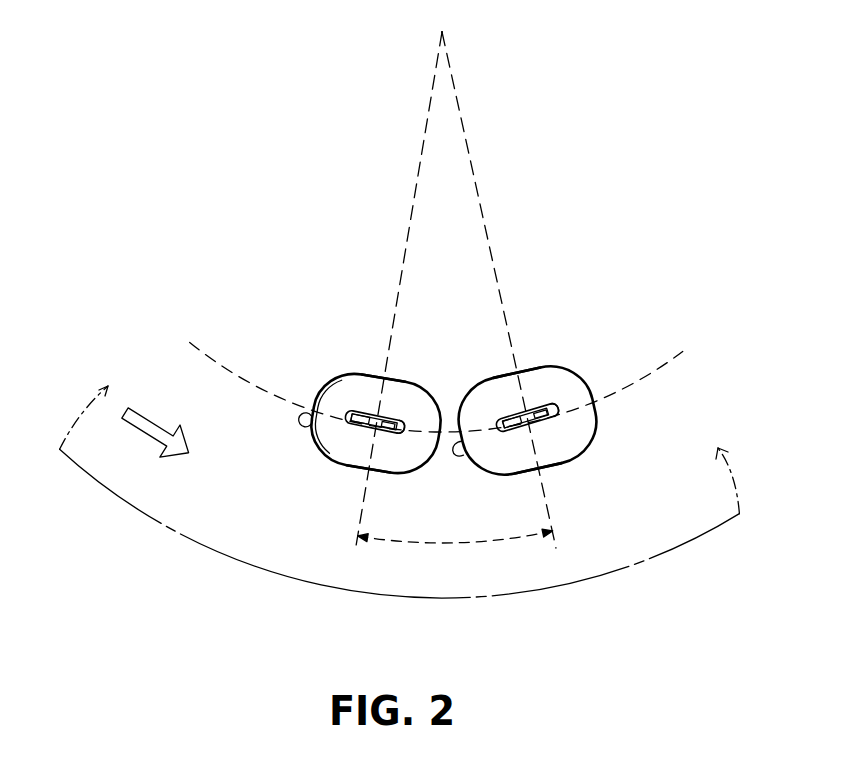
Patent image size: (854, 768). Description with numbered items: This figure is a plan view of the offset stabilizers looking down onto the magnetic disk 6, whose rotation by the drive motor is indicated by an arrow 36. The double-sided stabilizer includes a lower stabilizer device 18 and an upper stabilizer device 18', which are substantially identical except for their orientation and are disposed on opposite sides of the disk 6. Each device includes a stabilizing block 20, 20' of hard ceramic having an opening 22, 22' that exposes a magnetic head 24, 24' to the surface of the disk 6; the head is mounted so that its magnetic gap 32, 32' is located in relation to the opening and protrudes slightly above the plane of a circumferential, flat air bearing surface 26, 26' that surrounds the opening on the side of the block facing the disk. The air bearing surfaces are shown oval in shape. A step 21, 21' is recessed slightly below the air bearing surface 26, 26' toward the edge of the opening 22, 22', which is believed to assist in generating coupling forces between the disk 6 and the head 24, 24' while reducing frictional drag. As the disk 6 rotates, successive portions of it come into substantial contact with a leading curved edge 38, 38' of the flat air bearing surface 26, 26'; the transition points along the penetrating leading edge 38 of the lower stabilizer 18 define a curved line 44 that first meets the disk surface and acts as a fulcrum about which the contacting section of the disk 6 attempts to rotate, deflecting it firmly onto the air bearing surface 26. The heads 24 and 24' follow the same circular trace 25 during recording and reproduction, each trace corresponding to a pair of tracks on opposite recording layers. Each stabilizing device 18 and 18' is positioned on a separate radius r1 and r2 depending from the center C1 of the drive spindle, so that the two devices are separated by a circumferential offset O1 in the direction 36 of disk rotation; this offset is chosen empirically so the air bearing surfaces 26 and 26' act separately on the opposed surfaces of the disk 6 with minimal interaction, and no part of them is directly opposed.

The magnetic disk 6 is at (230, 530).
The lower stabilizer device 18 is at (376, 390).
The upper stabilizer device 18' is at (538, 381).
The stabilizing block 20 is at (379, 489).
The stabilizing block 20' is at (528, 488).
The step 21 is at (330, 388).
The step 21' is at (487, 391).
The opening 22 is at (420, 458).
The opening 22' is at (587, 441).
The magnetic head 24 is at (391, 390).
The magnetic head 24' is at (547, 460).
The circular trace 25 is at (248, 381).
The air bearing surface 26 is at (368, 347).
The air bearing surface 26' is at (526, 345).
The magnetic gap 32 is at (374, 383).
The magnetic gap 32' is at (520, 381).
The arrow 36 is at (138, 417).
The leading curved edge 38 is at (337, 417).
The leading curved edge 38' is at (488, 452).
The curved line 44 is at (305, 432).
The center of the drive spindle C1 is at (442, 32).
The radius r1 is at (419, 214).
The radius r2 is at (480, 217).
The circumferential offset O1 is at (447, 534).